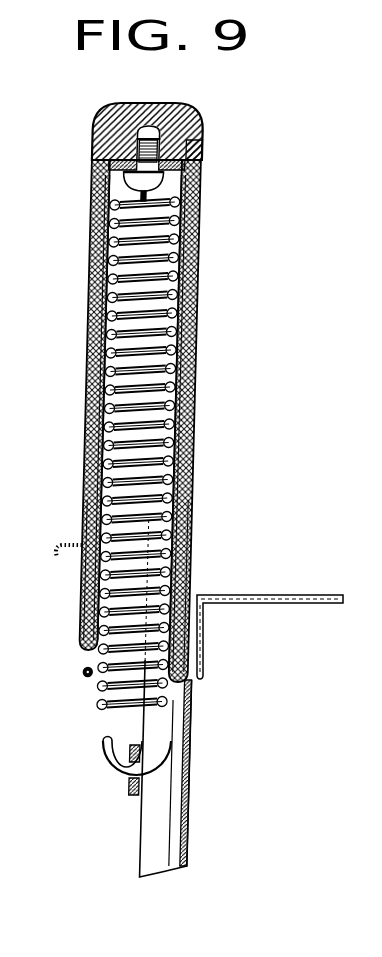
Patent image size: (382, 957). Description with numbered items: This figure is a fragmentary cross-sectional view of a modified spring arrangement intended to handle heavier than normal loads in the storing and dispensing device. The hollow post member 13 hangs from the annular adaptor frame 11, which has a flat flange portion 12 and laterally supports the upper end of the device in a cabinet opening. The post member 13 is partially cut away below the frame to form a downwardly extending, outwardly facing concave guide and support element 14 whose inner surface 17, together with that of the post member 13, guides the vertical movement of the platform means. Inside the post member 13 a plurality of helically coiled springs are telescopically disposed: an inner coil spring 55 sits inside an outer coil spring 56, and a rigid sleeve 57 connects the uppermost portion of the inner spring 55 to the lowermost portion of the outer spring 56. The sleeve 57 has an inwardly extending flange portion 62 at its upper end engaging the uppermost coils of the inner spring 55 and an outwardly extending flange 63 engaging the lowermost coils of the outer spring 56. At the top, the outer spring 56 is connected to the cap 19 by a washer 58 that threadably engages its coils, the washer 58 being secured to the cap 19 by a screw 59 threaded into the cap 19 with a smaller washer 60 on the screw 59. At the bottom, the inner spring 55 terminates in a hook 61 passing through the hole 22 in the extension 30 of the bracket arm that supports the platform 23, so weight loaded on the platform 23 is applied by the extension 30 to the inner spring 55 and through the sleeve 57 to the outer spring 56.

The cap 19 is at (183, 104).
The washer 58 is at (207, 152).
The screw 59 is at (143, 108).
The smaller washer 60 is at (99, 153).
The inwardly extending flange portion 62 is at (190, 192).
The hollow post member 13 is at (209, 335).
The rigid sleeve 57 is at (207, 378).
The outer coil spring 56 is at (203, 290).
The adaptor frame 11 is at (97, 580).
The inner coil spring 55 is at (200, 241).
The flat flange portion 12 is at (76, 543).
The outwardly extending flange 63 is at (99, 656).
The guide and support element 14 is at (181, 838).
The inner surface 17 is at (207, 725).
The hook 61 is at (119, 742).
The hole 22 is at (148, 782).
The extension 30 is at (151, 796).
The platform 23 is at (292, 598).